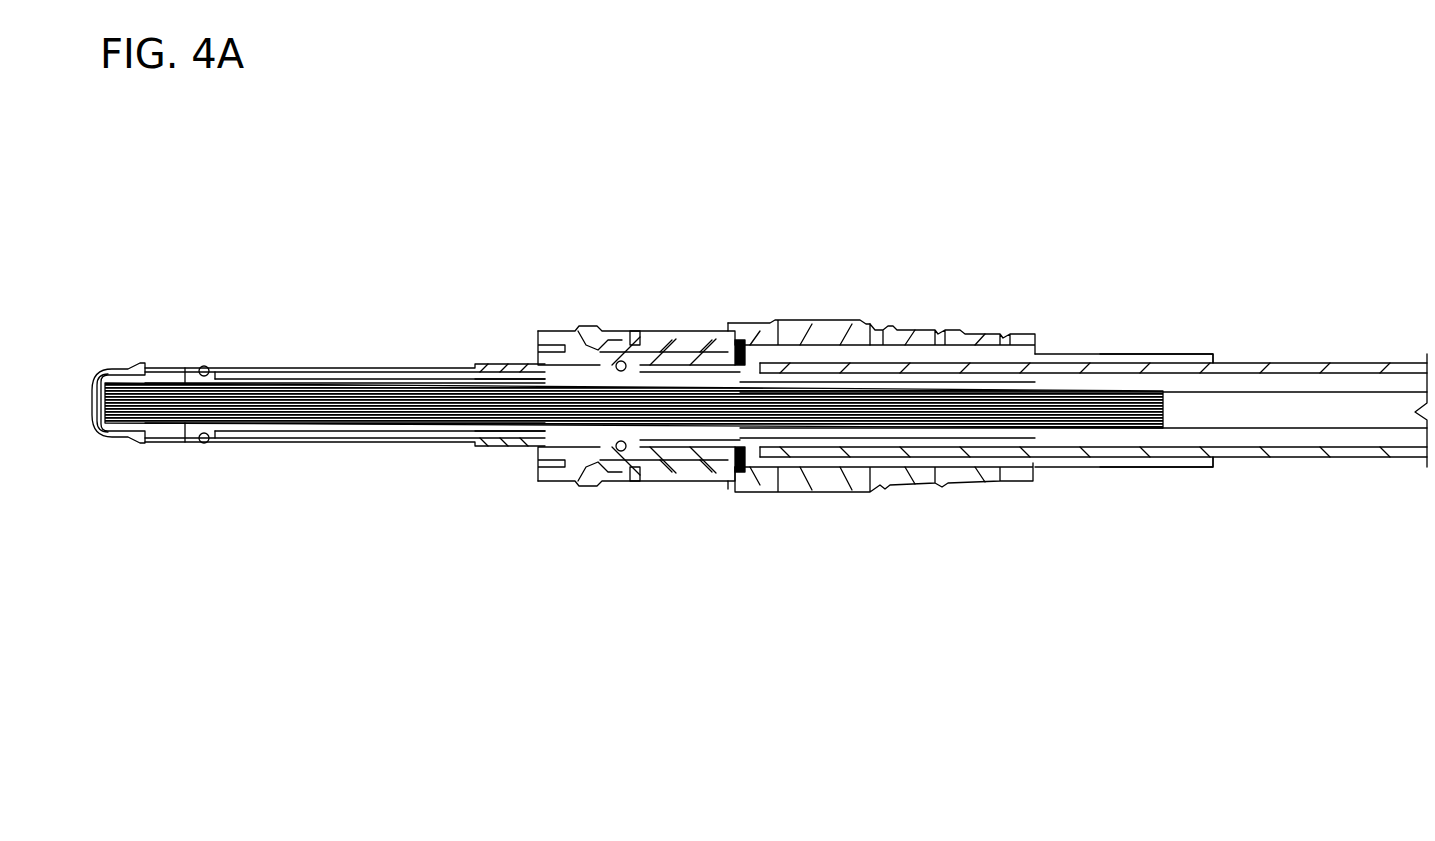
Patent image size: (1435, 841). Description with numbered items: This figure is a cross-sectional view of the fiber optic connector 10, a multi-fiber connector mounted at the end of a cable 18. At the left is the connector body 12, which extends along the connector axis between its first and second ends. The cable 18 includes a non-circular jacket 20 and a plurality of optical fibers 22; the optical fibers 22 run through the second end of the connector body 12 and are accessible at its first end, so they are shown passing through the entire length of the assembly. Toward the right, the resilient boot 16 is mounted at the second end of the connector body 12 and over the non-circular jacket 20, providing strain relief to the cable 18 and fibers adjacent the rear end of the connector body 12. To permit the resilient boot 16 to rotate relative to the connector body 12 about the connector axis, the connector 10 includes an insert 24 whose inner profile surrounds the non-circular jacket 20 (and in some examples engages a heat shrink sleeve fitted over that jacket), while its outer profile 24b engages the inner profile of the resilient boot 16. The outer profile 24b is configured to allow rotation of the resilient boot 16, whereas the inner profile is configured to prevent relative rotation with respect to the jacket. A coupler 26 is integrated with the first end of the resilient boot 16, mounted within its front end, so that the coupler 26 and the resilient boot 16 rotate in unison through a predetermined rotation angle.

The fiber optic connector 10 is at (461, 637).
The connector body 12 is at (263, 440).
The resilient boot 16 is at (780, 330).
The cable 18 is at (1264, 558).
The non-circular jacket 20 is at (1198, 350).
The optical fiber 22 is at (258, 367).
The insert 24 is at (917, 347).
The outer profile 24b is at (863, 470).
The coupler 26 is at (595, 327).